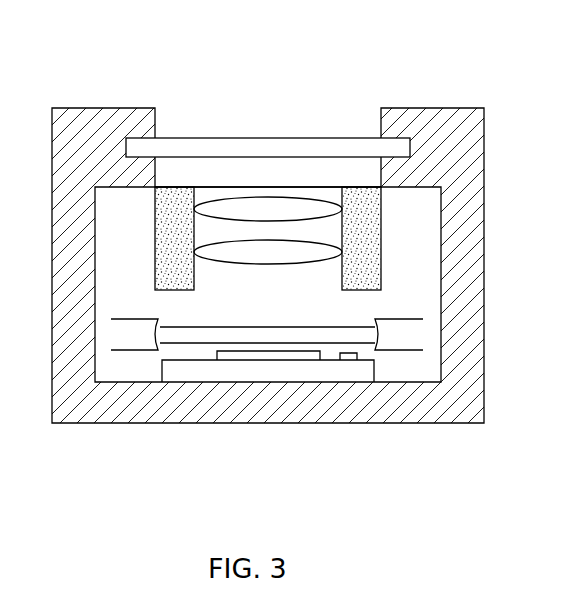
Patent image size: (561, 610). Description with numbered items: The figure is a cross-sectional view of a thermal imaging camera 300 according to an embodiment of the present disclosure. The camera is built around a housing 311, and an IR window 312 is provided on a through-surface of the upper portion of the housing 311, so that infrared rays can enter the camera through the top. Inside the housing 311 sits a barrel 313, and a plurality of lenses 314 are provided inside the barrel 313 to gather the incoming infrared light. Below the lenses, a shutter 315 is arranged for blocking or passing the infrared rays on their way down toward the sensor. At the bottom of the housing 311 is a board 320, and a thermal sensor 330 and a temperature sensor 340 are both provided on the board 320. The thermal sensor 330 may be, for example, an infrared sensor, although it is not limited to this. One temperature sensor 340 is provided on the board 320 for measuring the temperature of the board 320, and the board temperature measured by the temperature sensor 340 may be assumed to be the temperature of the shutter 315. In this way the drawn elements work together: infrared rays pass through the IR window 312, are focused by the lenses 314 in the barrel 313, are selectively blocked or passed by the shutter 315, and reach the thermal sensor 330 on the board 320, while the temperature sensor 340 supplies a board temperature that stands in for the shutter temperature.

The thermal imaging camera 300 is at (93, 48).
The housing 311 is at (452, 108).
The IR window 312 is at (248, 138).
The barrel 313 is at (375, 228).
The lenses 314 is at (278, 205).
The shutter 315 is at (185, 335).
The board 320 is at (208, 370).
The thermal sensor 330 is at (263, 353).
The temperature sensor 340 is at (348, 355).